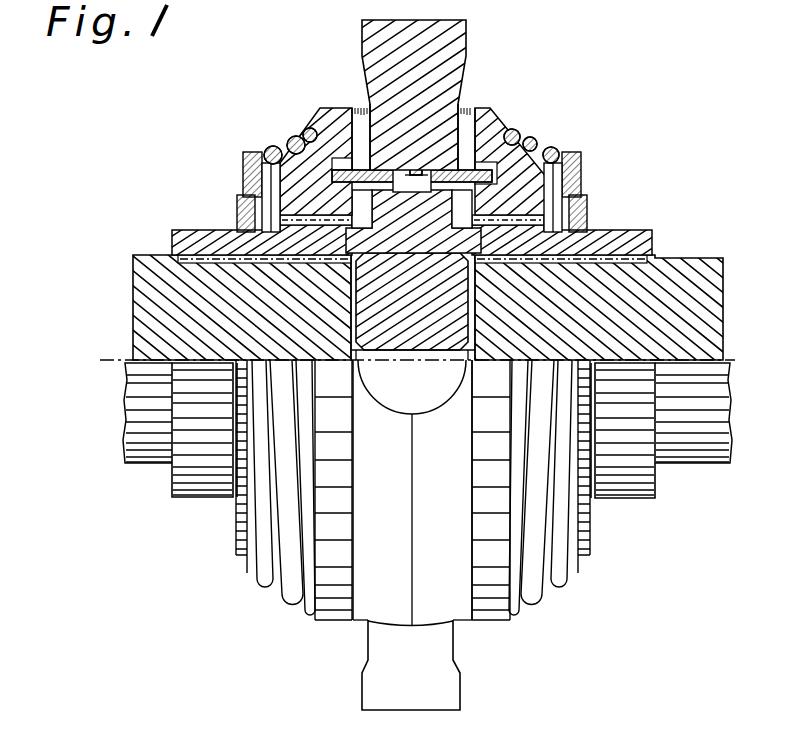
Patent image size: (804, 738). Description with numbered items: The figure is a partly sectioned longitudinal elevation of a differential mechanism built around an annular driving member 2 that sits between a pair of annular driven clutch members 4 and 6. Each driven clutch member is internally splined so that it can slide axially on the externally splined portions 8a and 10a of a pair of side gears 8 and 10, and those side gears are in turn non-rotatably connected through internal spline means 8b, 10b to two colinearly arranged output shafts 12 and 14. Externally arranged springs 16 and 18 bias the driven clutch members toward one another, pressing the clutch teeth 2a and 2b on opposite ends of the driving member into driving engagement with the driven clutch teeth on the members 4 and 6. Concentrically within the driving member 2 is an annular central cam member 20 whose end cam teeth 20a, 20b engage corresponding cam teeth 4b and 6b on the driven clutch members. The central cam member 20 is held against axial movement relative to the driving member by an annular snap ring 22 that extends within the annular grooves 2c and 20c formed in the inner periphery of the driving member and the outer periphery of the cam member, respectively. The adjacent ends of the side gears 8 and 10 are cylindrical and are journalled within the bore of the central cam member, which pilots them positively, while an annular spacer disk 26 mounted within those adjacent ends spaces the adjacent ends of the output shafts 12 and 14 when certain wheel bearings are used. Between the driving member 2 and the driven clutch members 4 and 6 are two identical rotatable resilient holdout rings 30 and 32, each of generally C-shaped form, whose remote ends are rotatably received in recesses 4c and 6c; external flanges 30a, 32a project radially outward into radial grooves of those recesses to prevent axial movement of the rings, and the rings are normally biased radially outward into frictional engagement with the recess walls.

The annular driving member 2 is at (404, 127).
The clutch teeth 2a is at (369, 107).
The clutch teeth 2b is at (502, 99).
The annular groove 2c is at (414, 147).
The driven clutch member 4 is at (316, 166).
The cam teeth 4b is at (346, 256).
The recess 4c is at (333, 176).
The driven clutch member 6 is at (511, 167).
The cam teeth 6b is at (480, 270).
The recess 6c is at (497, 177).
The side gear 8 is at (242, 315).
The externally splined portion 8a is at (174, 190).
The internal spline means 8b is at (242, 315).
The side gear 10 is at (597, 311).
The externally splined portion 10a is at (647, 195).
The internal spline means 10b is at (599, 311).
The output shaft 12 is at (147, 464).
The output shaft 14 is at (700, 465).
The spring 16 is at (273, 146).
The spring 18 is at (553, 147).
The central cam member 20 is at (412, 303).
The cam teeth 20a is at (362, 209).
The cam teeth 20b is at (462, 209).
The annular groove 20c is at (413, 178).
The annular snap ring 22 is at (413, 221).
The annular spacer disk 26 is at (358, 342).
The resilient holdout ring 30 is at (325, 137).
The external flange 30a is at (322, 117).
The resilient holdout ring 32 is at (499, 137).
The external flange 32a is at (523, 138).